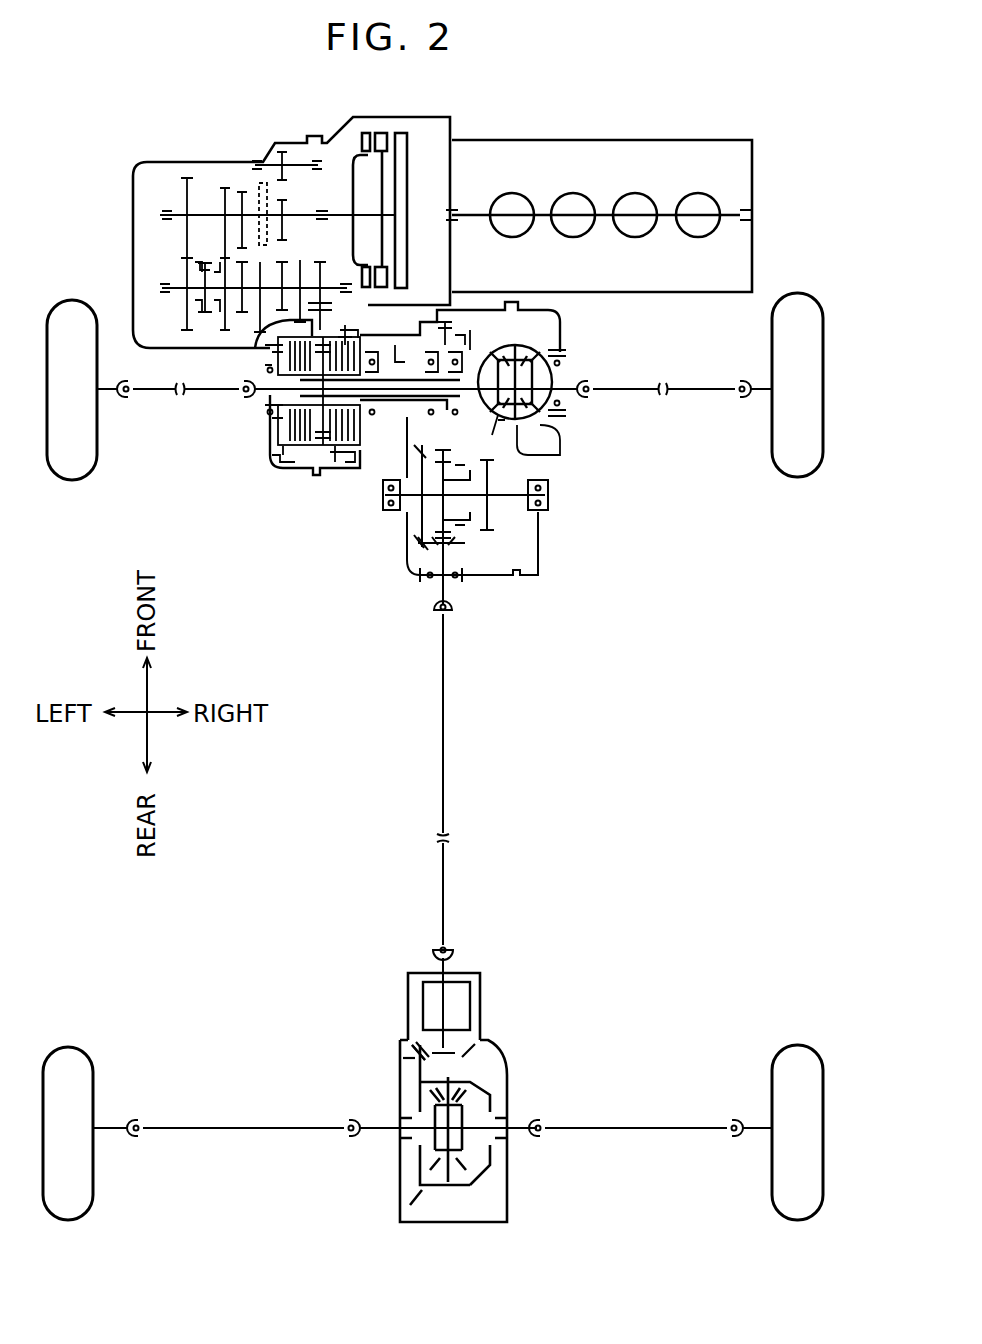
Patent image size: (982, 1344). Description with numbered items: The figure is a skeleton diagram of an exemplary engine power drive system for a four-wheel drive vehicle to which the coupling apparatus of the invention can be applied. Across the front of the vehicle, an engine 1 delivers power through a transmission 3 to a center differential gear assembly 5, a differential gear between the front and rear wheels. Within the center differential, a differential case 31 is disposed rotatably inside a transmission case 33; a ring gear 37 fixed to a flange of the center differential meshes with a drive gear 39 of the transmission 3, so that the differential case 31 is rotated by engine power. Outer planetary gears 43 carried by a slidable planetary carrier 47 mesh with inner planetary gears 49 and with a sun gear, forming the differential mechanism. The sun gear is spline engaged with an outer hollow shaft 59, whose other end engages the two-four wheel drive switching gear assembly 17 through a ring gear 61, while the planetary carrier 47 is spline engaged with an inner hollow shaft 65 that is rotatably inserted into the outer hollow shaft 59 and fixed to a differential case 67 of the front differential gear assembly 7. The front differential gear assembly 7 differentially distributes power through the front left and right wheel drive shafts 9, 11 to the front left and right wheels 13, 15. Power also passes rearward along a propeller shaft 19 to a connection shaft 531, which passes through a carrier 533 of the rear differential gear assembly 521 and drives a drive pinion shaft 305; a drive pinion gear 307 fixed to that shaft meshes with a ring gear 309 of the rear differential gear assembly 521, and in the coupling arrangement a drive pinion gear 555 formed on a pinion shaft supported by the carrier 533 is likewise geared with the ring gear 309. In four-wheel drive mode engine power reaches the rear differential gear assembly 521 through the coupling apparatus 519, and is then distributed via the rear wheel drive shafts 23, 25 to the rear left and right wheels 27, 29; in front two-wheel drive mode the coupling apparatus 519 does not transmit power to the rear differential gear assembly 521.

The engine 1 is at (582, 150).
The transmission 3 is at (250, 178).
The center differential gear assembly 5 is at (257, 447).
The front differential gear assembly 7 is at (544, 330).
The front left wheel drive shaft 9 is at (178, 402).
The front right wheel drive shaft 11 is at (663, 400).
The front left wheel 13 is at (74, 314).
The front right wheel 15 is at (792, 310).
The 2-4 wheel drive switching gear assembly 17 is at (512, 534).
The propeller shaft 19 is at (447, 815).
The rear left wheel drive shaft 23 is at (226, 1137).
The rear right wheel drive shaft 25 is at (601, 1137).
The rear left wheel 27 is at (82, 1075).
The rear right wheel 29 is at (790, 1075).
The differential case 31 is at (365, 330).
The transmission case 33 is at (283, 470).
The ring gear 37 is at (345, 462).
The drive gear 39 is at (320, 264).
The outer planetary gears 43 is at (308, 448).
The slidable planetary carrier 47 is at (273, 397).
The inner planetary gears 49 is at (273, 348).
The outer hollow shaft 59 is at (378, 398).
The ring gear 61 is at (452, 312).
The inner hollow shaft 65 is at (417, 398).
The differential case 67 is at (512, 430).
The drive pinion shaft 305 is at (447, 1010).
The drive pinion gear 307 is at (422, 1048).
The ring gear 309 is at (420, 1057).
The coupling apparatus 519 is at (490, 988).
The rear differential gear assembly 521 is at (485, 1075).
The connection shaft 531 is at (447, 965).
The carrier 533 is at (405, 985).
The drive pinion gear 555 is at (418, 1052).